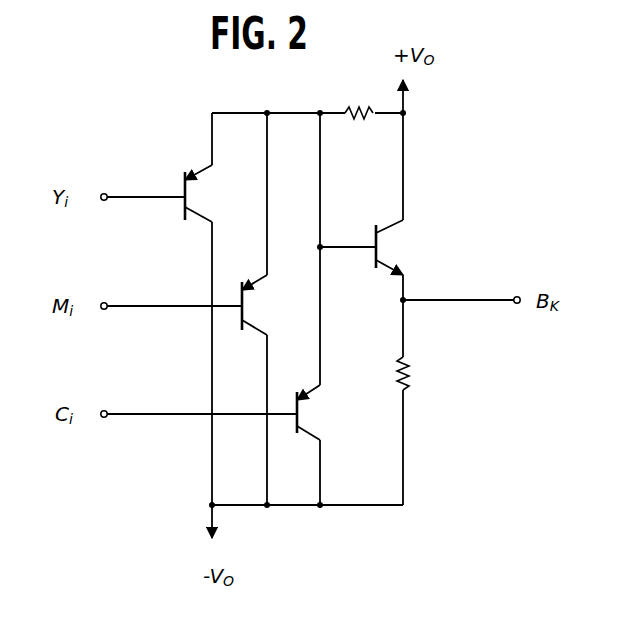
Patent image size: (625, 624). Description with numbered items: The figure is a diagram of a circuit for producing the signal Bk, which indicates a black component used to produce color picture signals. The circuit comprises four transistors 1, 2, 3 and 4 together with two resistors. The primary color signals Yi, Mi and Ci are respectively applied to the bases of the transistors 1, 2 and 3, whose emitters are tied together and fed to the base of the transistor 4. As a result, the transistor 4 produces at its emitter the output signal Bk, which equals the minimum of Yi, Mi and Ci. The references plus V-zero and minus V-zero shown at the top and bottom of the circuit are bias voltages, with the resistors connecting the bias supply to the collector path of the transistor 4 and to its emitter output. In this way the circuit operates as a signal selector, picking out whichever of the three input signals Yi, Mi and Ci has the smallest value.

The transistor 1 is at (194, 200).
The transistor 2 is at (251, 311).
The transistor 3 is at (310, 419).
The transistor 4 is at (388, 251).